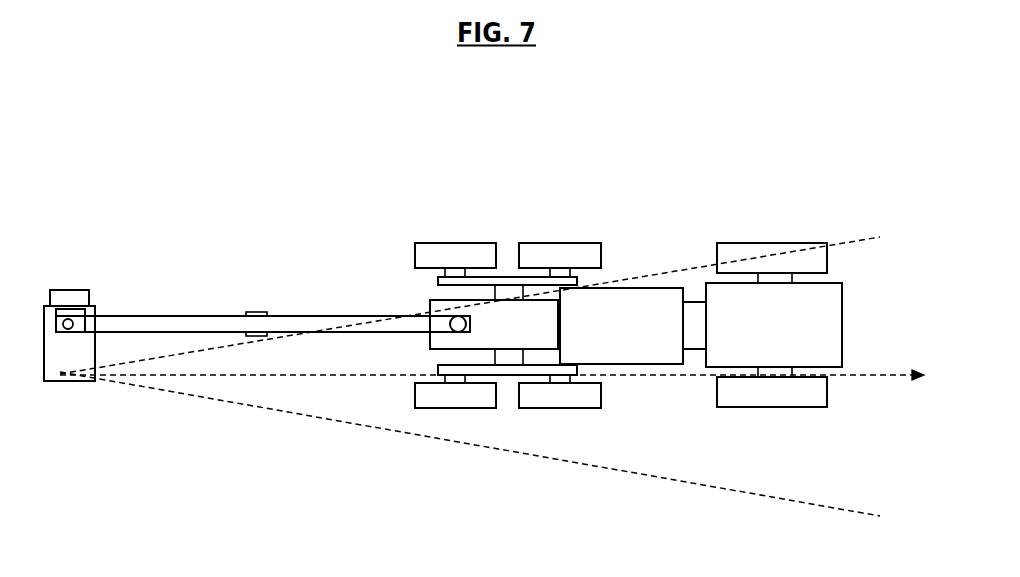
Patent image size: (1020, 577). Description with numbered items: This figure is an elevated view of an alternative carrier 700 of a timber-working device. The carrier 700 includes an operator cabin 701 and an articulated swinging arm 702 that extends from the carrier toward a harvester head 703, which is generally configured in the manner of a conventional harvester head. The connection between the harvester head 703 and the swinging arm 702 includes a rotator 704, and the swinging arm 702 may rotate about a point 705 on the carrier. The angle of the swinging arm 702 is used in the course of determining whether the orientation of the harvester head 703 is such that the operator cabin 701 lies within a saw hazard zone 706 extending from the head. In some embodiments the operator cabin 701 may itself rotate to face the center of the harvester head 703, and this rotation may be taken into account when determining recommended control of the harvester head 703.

The carrier 700 is at (148, 108).
The operator cabin 701 is at (643, 341).
The articulated swinging arm 702 is at (260, 312).
The harvester head 703 is at (69, 388).
The rotator 704 is at (74, 310).
The point 705 is at (449, 322).
The saw hazard zone 706 is at (423, 437).